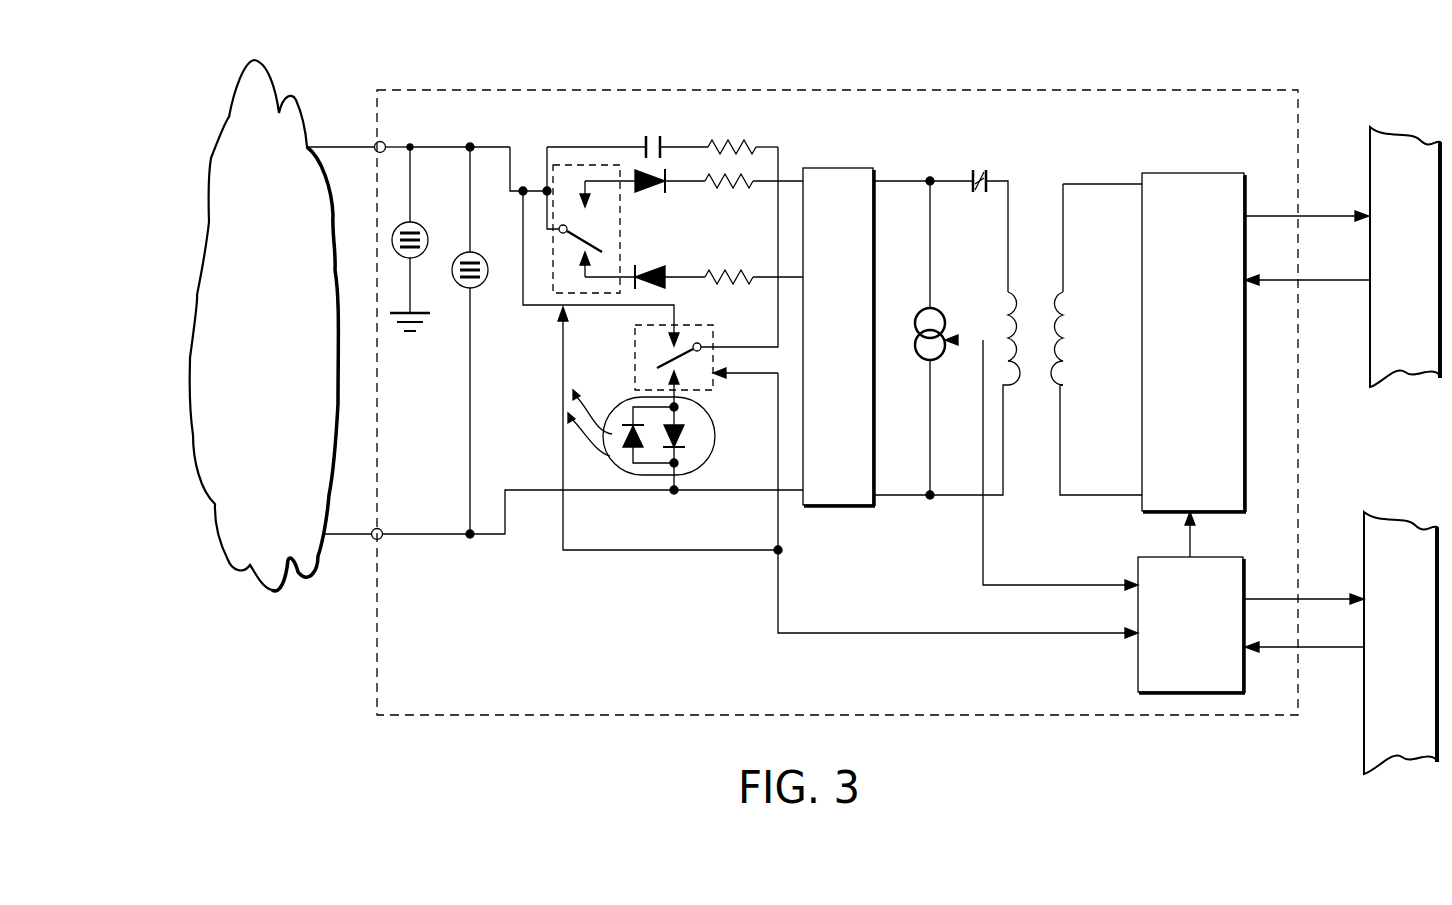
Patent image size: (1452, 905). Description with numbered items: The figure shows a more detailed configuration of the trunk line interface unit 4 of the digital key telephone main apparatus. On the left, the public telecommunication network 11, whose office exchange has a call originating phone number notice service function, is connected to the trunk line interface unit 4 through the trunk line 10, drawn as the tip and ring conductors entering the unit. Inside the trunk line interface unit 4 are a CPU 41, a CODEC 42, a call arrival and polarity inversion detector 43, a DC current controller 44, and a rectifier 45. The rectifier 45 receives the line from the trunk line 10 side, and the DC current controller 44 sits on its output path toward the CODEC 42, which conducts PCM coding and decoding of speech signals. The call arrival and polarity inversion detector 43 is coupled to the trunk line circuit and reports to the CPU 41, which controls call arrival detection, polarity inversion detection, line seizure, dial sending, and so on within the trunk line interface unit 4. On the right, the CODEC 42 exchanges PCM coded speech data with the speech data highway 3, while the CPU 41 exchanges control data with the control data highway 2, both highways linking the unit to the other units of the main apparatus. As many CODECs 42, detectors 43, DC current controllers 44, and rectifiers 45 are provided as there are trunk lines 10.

The control data highway 2 is at (1415, 765).
The speech data highway 3 is at (1415, 380).
The trunk line interface unit 4 is at (1262, 89).
The trunk line 10 is at (345, 145).
The public telecommunication network 11 is at (268, 572).
The CPU 41 is at (1138, 668).
The CODEC 42 is at (1143, 510).
The call arrival and polarity inversion detector 43 is at (640, 478).
The DC current controller 44 is at (953, 325).
The rectifier 45 is at (838, 185).